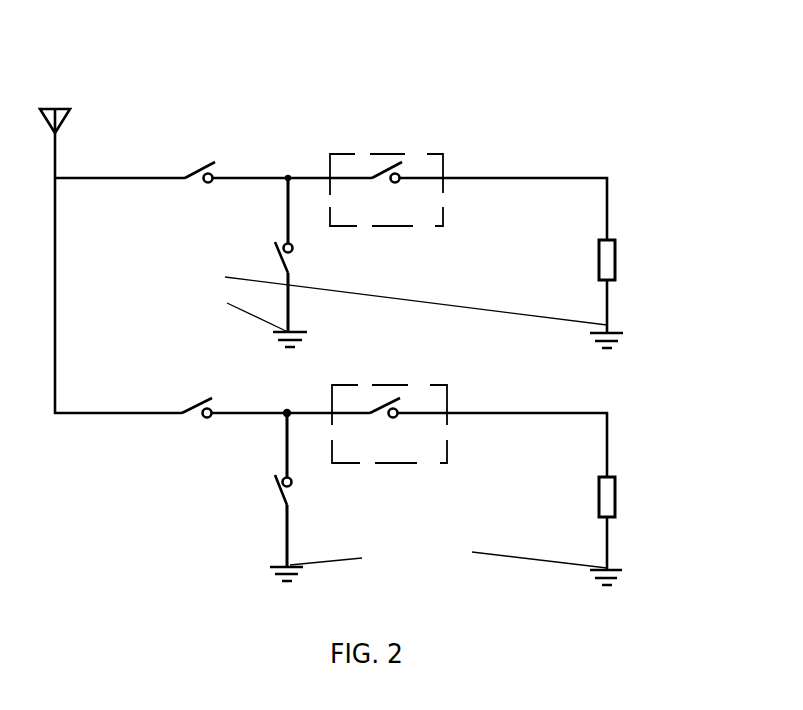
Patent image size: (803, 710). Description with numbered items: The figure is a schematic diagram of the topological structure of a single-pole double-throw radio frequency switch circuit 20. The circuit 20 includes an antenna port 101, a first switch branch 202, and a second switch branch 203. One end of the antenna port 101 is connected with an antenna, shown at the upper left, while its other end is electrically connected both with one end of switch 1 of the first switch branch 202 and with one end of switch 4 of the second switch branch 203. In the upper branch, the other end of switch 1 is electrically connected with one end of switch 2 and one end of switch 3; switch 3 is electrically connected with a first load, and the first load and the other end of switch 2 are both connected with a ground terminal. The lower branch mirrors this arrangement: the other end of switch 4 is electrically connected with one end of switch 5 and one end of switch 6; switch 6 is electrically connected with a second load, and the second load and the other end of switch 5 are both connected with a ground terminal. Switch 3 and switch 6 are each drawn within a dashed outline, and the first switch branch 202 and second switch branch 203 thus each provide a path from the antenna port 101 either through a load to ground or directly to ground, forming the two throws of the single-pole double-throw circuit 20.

The single-pole double-throw radio frequency switch circuit 20 is at (380, 306).
The antenna port 101 is at (178, 125).
The first switch branch 202 is at (289, 177).
The second switch branch 203 is at (187, 500).
The switch 1 is at (217, 195).
The switch 2 is at (357, 246).
The switch 3 is at (420, 215).
The switch 4 is at (213, 432).
The switch 5 is at (360, 485).
The switch 6 is at (420, 452).